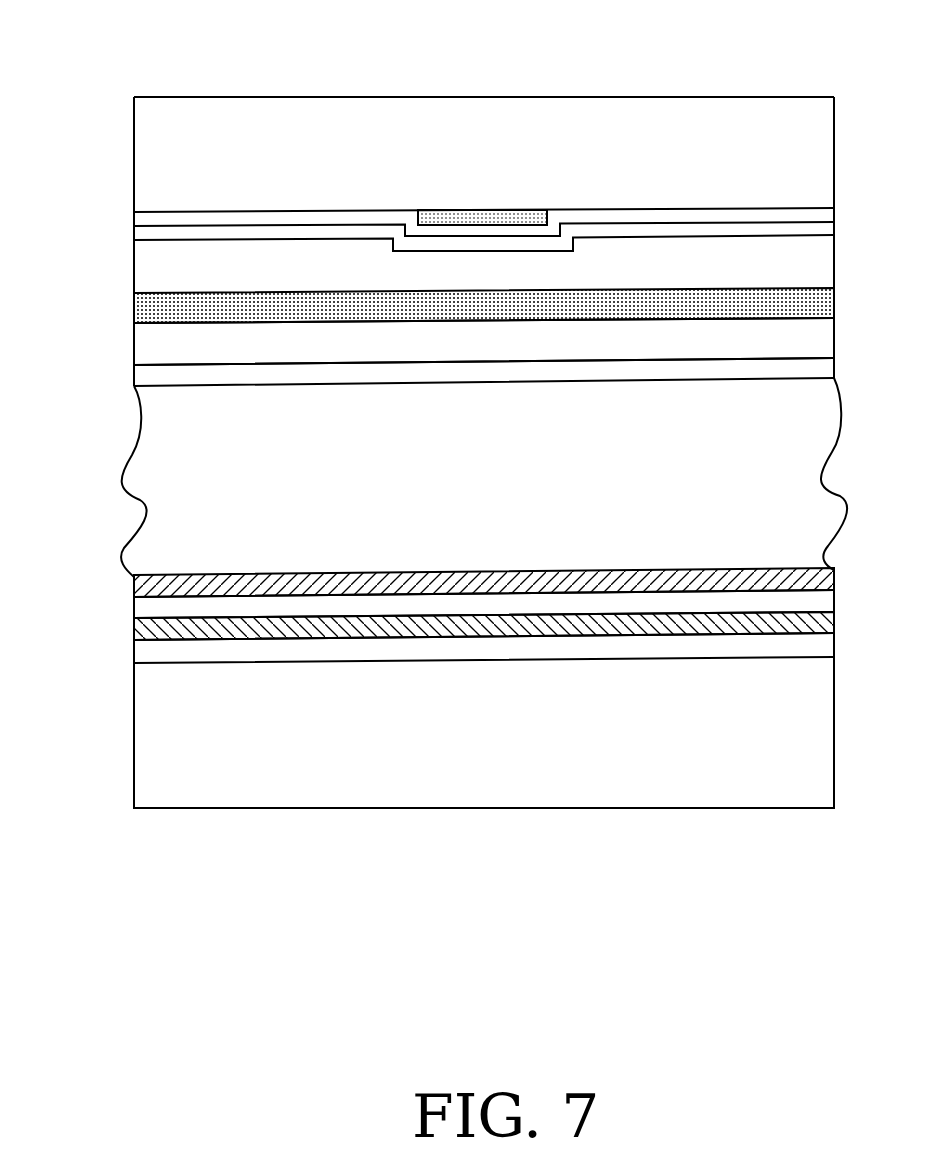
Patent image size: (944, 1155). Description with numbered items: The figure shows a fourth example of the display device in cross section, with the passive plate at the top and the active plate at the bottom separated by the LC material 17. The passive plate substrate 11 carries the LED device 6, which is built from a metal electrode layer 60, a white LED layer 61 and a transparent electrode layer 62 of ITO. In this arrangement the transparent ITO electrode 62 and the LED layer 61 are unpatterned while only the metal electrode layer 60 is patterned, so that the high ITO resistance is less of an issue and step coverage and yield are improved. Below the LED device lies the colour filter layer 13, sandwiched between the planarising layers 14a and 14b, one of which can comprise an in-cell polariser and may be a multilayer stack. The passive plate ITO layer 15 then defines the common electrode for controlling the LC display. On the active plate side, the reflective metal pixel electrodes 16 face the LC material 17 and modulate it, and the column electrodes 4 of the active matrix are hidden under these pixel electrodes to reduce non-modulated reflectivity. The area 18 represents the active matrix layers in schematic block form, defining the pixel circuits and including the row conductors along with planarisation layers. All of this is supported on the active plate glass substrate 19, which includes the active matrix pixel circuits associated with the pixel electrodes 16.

The passive plate substrate 11 is at (148, 163).
The planarising layer 14a is at (148, 258).
The colour filter layer 13 is at (148, 311).
The planarising layer 14b is at (148, 343).
The passive plate ITO layer 15 is at (148, 376).
The LC material 17 is at (485, 485).
The reflective metal pixel electrodes 16 is at (148, 587).
The active matrix layers 18 is at (148, 615).
The column electrodes 4 is at (148, 626).
The active plate glass substrate 19 is at (148, 749).
The LED device 6 is at (517, 192).
The metal electrode layer 60 is at (451, 210).
The white LED layer 61 is at (353, 225).
The transparent electrode layer 62 is at (263, 238).